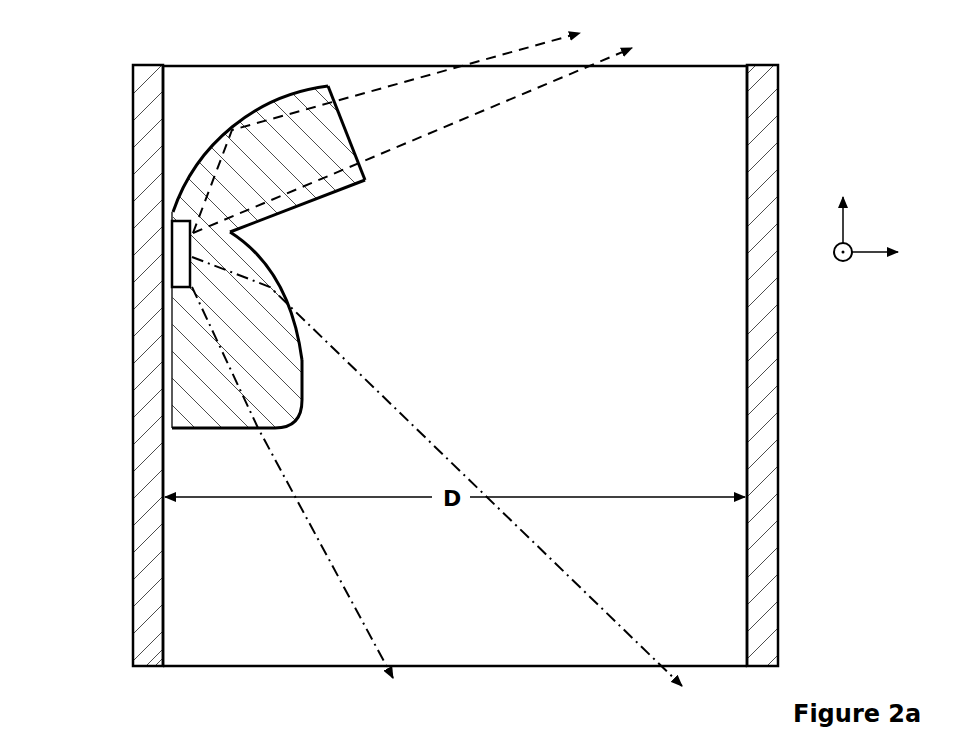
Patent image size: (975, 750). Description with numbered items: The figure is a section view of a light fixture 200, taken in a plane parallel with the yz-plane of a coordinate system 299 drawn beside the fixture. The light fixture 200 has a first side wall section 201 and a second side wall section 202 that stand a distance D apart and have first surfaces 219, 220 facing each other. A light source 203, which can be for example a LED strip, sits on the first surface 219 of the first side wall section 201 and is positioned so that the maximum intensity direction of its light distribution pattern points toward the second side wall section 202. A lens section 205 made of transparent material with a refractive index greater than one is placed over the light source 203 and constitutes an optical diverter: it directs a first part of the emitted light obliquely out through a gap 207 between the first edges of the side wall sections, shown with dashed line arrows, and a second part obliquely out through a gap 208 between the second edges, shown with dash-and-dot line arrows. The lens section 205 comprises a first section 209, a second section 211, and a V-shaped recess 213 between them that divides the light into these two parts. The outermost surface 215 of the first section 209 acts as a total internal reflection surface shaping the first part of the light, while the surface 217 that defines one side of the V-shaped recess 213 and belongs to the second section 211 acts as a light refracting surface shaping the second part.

The light fixture 200 is at (276, 45).
The first side wall section 201 is at (145, 63).
The second side wall section 202 is at (778, 134).
The light source 203 is at (181, 252).
The lens section 205 is at (303, 360).
The gap 207 is at (412, 100).
The gap 208 is at (510, 650).
The first section 209 is at (311, 133).
The second section 211 is at (237, 372).
The V-shaped recess 213 is at (235, 232).
The outermost surface 215 is at (252, 109).
The surface 217 is at (272, 271).
The first surface 219 is at (166, 601).
The first surface 220 is at (745, 612).
The coordinate system 299 is at (868, 225).